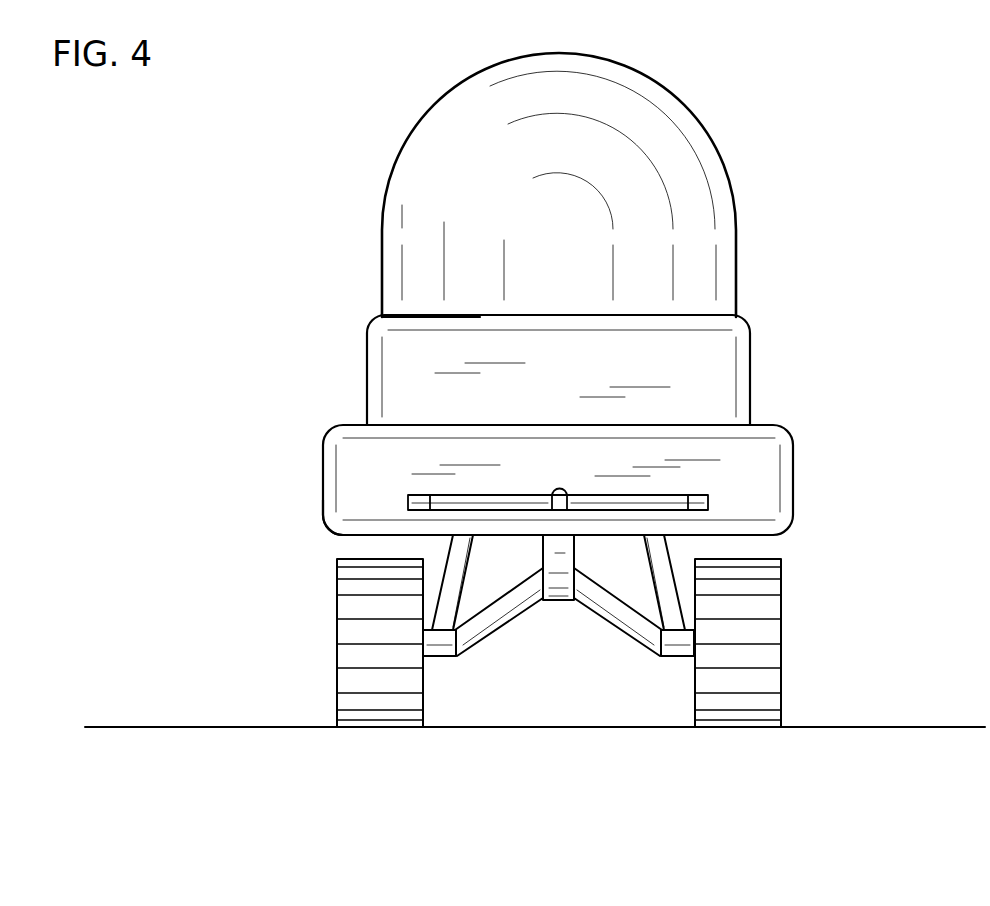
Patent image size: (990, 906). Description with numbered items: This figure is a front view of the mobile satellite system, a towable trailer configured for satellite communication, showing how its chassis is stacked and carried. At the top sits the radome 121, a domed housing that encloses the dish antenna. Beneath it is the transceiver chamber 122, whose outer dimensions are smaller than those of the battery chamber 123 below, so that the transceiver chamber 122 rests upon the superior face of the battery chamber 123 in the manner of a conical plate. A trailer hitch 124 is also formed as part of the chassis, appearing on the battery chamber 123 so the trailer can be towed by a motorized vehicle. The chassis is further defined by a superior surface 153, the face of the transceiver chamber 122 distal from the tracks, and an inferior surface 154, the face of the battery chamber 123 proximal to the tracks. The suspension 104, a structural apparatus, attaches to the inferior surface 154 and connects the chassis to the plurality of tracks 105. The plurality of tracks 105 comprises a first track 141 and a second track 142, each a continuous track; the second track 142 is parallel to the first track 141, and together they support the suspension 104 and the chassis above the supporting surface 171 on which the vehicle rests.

The radome 121 is at (737, 246).
The transceiver chamber 122 is at (727, 352).
The battery chamber 123 is at (763, 502).
The trailer hitch 124 is at (657, 500).
The superior surface 153 is at (430, 317).
The inferior surface 154 is at (351, 533).
The suspension 104 is at (657, 569).
The second track 142 is at (338, 659).
The first track 141 is at (780, 682).
The plurality of tracks 105 is at (405, 701).
The supporting surface 171 is at (843, 728).